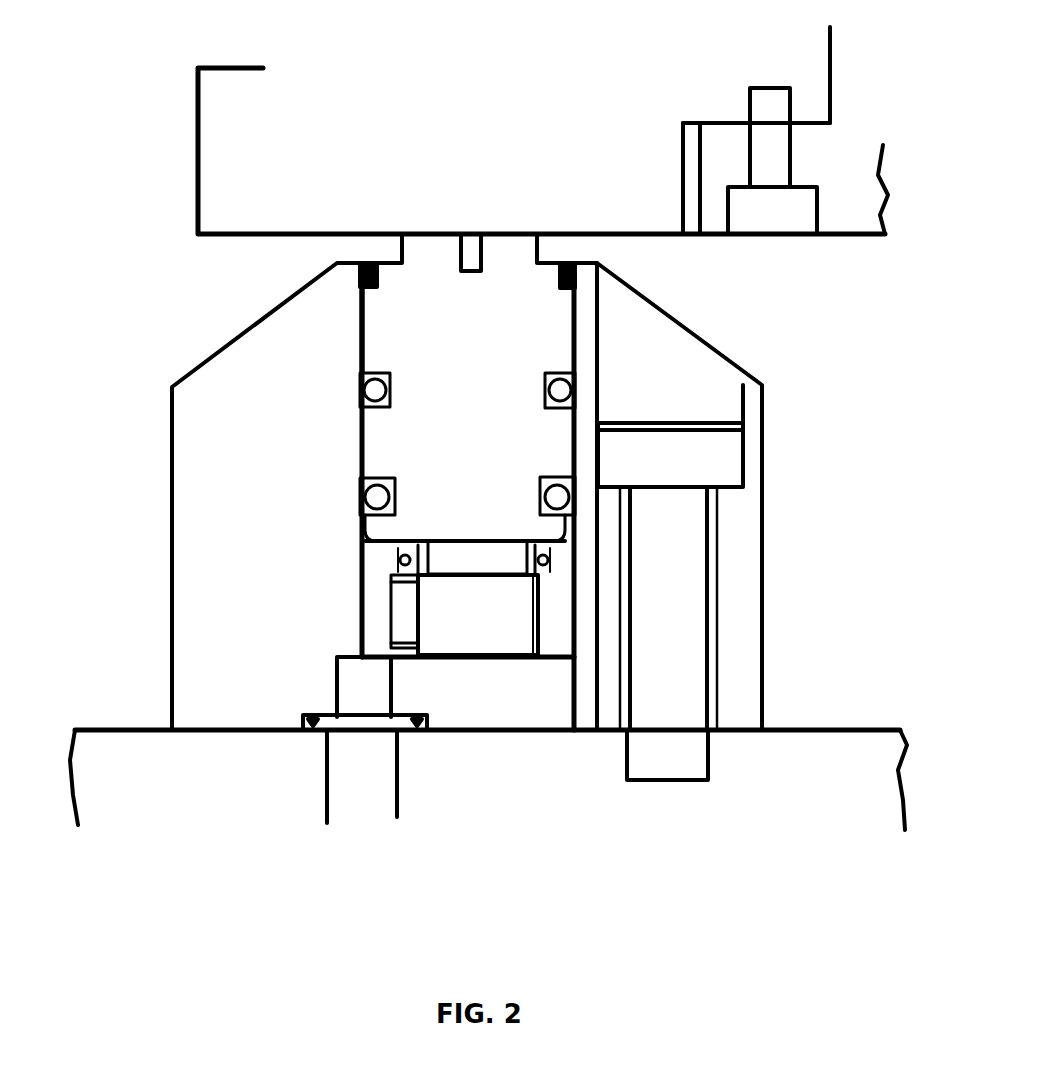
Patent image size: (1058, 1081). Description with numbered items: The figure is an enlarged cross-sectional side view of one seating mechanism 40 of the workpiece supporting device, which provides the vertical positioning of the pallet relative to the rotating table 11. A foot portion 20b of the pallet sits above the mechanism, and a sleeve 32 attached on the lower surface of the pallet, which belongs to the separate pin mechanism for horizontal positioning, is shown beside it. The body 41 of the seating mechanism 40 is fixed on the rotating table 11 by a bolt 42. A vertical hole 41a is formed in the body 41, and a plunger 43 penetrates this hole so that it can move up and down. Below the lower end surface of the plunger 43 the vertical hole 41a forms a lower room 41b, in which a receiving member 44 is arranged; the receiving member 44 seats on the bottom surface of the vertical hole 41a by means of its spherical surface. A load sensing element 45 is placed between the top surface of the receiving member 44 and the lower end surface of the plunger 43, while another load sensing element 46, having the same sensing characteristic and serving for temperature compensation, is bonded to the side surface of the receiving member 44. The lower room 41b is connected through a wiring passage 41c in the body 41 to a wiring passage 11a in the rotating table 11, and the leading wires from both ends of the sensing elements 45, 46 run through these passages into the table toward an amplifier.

The rotating table 11 is at (835, 748).
The wiring passage 11a is at (386, 797).
The foot portion 20b is at (304, 190).
The sleeve 32 is at (845, 107).
The seating mechanism 40 is at (784, 392).
The body 41 is at (222, 537).
The vertical hole 41a is at (376, 355).
The lower room 41b is at (553, 643).
The wiring passage 41c is at (358, 683).
The bolt 42 is at (690, 642).
The plunger 43 is at (390, 435).
The receiving member 44 is at (480, 617).
The load sensing element 45 is at (480, 562).
The load sensing element 46 is at (403, 606).